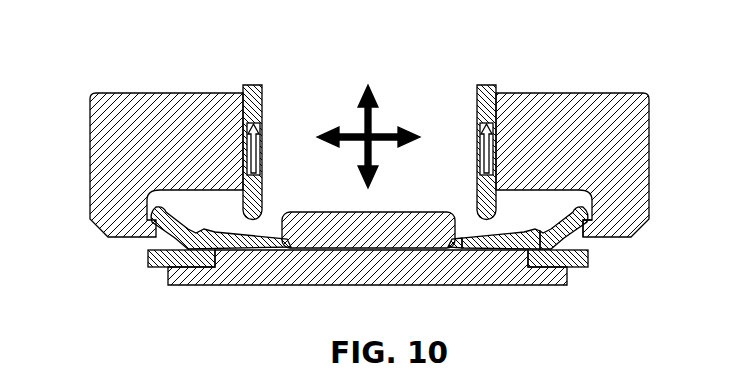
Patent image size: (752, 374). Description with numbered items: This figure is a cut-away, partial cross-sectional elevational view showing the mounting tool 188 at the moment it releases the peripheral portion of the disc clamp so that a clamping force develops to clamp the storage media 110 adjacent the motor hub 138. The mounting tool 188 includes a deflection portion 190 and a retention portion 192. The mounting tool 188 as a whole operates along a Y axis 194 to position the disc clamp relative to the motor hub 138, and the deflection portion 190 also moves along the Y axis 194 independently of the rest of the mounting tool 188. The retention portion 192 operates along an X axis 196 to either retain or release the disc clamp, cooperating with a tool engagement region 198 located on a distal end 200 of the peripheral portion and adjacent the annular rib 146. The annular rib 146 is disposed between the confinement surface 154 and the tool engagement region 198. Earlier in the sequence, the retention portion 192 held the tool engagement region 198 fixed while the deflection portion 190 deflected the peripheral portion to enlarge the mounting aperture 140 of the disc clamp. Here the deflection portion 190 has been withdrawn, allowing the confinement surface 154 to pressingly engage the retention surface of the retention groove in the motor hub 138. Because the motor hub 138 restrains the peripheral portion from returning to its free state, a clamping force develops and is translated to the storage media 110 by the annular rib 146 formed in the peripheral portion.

The mounting tool 188 is at (290, 66).
The retention portion 192 is at (120, 100).
The deflection portion 190 is at (262, 88).
The Y axis 194 is at (372, 120).
The X axis 196 is at (352, 140).
The mounting aperture 140 is at (333, 252).
The motor hub 138 is at (272, 283).
The storage media 110 is at (152, 258).
The tool engagement region 198 is at (559, 213).
The annular rib 146 is at (551, 247).
The confinement surface 154 is at (462, 235).
The distal end 200 is at (568, 235).